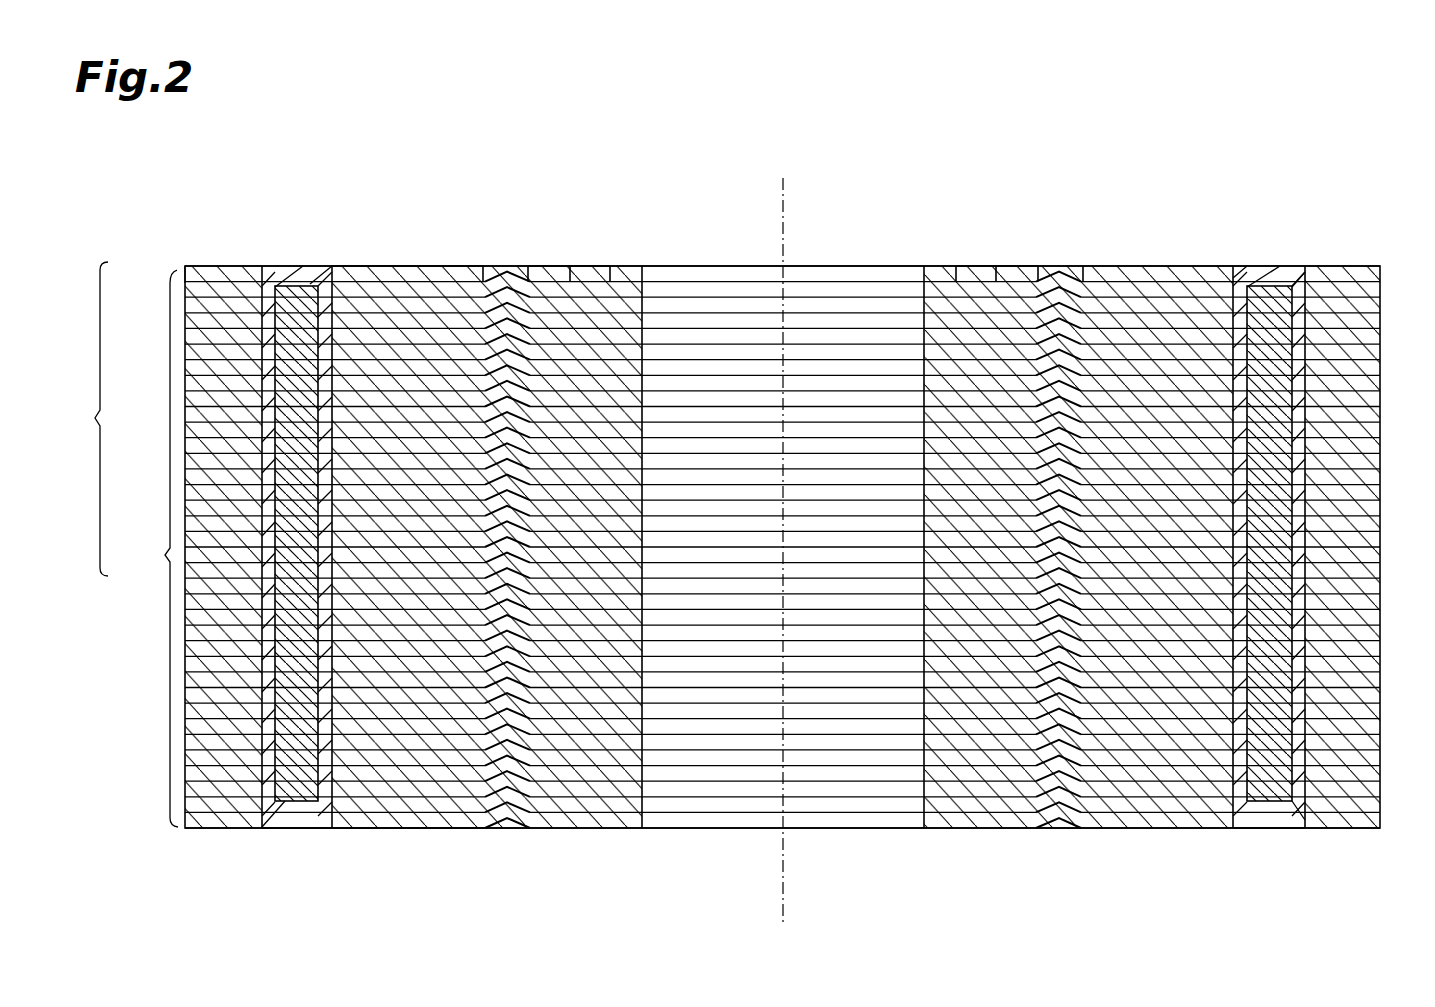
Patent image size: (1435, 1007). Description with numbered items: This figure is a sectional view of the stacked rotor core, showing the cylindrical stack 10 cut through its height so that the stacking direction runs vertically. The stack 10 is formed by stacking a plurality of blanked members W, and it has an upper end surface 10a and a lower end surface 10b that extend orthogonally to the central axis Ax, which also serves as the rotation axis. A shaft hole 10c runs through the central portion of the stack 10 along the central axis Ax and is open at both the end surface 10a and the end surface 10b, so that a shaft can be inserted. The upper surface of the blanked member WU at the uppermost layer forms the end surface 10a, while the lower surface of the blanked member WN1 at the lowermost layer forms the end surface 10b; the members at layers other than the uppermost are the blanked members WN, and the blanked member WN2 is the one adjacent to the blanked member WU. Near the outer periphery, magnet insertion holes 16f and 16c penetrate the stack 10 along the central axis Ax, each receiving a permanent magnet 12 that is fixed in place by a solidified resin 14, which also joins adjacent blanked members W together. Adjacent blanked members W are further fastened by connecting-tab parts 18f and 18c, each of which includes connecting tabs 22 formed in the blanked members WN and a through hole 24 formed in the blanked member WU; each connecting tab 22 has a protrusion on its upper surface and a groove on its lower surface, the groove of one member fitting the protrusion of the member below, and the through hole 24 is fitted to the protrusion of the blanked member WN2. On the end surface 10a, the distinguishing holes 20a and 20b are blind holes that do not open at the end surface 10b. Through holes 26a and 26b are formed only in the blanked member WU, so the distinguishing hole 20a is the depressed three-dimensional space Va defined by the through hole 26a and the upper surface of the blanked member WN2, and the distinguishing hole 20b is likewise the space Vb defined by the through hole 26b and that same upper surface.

The stack 10 is at (1376, 250).
The end surface 10a is at (1143, 267).
The end surface 10b is at (1166, 830).
The shaft hole 10c is at (878, 842).
The permanent magnet 12 is at (290, 772).
The solidified resin 14 is at (269, 284).
The magnet insertion hole 16f is at (323, 830).
The magnet insertion hole 16c is at (1250, 830).
The connecting-tab part 18f is at (504, 841).
The connecting-tab part 18c is at (1062, 841).
The distinguishing hole 20a is at (591, 266).
The distinguishing hole 20b is at (976, 266).
The connecting tab 22 is at (511, 815).
The through hole 24 is at (490, 267).
The through hole 26a is at (604, 267).
The through hole 26b is at (990, 267).
The central axis Ax is at (785, 200).
The three-dimensional space Va is at (582, 266).
The three-dimensional space Vb is at (967, 266).
The blanked member W is at (86, 419).
The blanked member WU is at (186, 268).
The blanked member WN is at (145, 548).
The blanked member WN1 is at (407, 822).
The blanked member WN2 is at (374, 285).